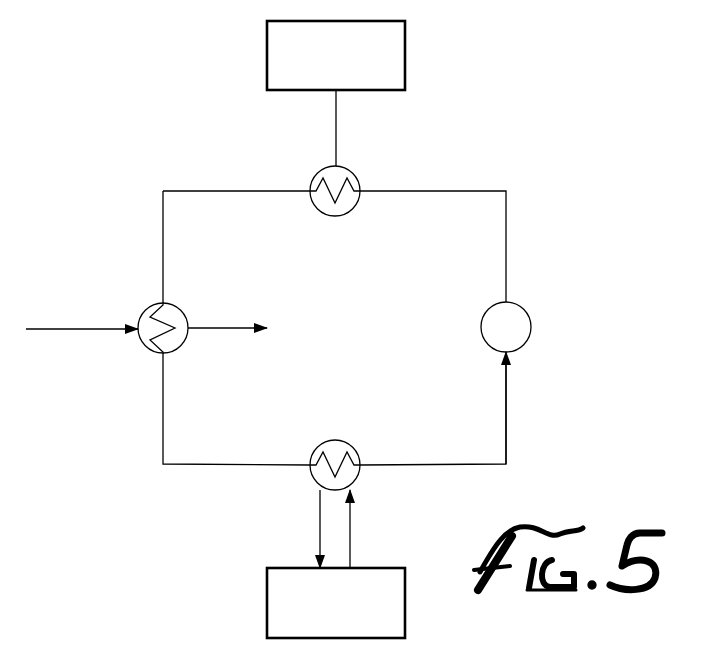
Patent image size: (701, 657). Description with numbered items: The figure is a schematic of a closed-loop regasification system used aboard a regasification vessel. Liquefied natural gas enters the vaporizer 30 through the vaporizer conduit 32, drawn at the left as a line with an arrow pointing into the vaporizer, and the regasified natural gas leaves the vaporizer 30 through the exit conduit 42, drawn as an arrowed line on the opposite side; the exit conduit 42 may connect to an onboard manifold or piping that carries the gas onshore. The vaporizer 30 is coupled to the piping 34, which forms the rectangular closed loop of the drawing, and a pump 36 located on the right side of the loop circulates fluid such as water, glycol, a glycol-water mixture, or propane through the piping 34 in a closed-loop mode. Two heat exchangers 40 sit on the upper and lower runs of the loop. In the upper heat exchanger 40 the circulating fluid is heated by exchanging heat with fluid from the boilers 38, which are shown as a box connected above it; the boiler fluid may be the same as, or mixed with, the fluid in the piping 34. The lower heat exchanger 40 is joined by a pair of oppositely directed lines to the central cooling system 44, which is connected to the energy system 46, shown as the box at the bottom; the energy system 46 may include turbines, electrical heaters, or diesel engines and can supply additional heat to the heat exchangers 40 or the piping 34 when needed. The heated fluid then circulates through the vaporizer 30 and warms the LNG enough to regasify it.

The vaporizer 30 is at (155, 353).
The vaporizer conduit 32 is at (78, 329).
The piping 34 is at (506, 263).
The pump 36 is at (530, 317).
The boilers 38 is at (347, 64).
The heat exchangers 40 is at (330, 215).
The exit conduit 42 is at (217, 327).
The central cooling system 44 is at (350, 525).
The energy system 46 is at (347, 610).